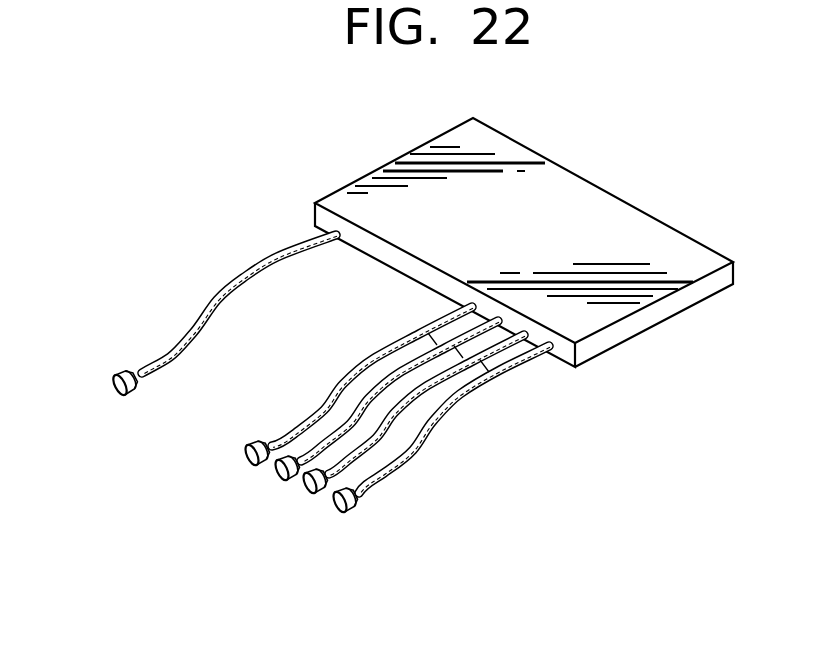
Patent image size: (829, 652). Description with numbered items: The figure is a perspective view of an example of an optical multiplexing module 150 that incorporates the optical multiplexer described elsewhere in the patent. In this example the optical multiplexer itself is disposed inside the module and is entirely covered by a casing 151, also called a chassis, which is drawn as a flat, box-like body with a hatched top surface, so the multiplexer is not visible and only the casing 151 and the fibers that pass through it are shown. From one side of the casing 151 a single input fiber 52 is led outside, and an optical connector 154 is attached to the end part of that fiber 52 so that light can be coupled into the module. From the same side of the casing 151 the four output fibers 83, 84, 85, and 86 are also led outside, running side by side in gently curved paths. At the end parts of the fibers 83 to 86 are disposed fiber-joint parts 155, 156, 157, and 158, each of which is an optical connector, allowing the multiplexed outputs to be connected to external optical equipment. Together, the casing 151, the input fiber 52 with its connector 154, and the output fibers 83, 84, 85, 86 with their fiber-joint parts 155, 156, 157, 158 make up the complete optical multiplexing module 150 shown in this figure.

The optical multiplexing module 150 is at (542, 145).
The casing 151 is at (610, 233).
The input fiber 52 is at (212, 298).
The optical connector ferrule 154 is at (118, 373).
The output fiber 83 is at (417, 330).
The output fiber 84 is at (337, 377).
The output fiber 85 is at (478, 366).
The output fiber 86 is at (437, 437).
The fiber-joint part 155 is at (247, 462).
The fiber-joint part 156 is at (277, 480).
The fiber-joint part 157 is at (307, 495).
The fiber-joint part 158 is at (357, 515).